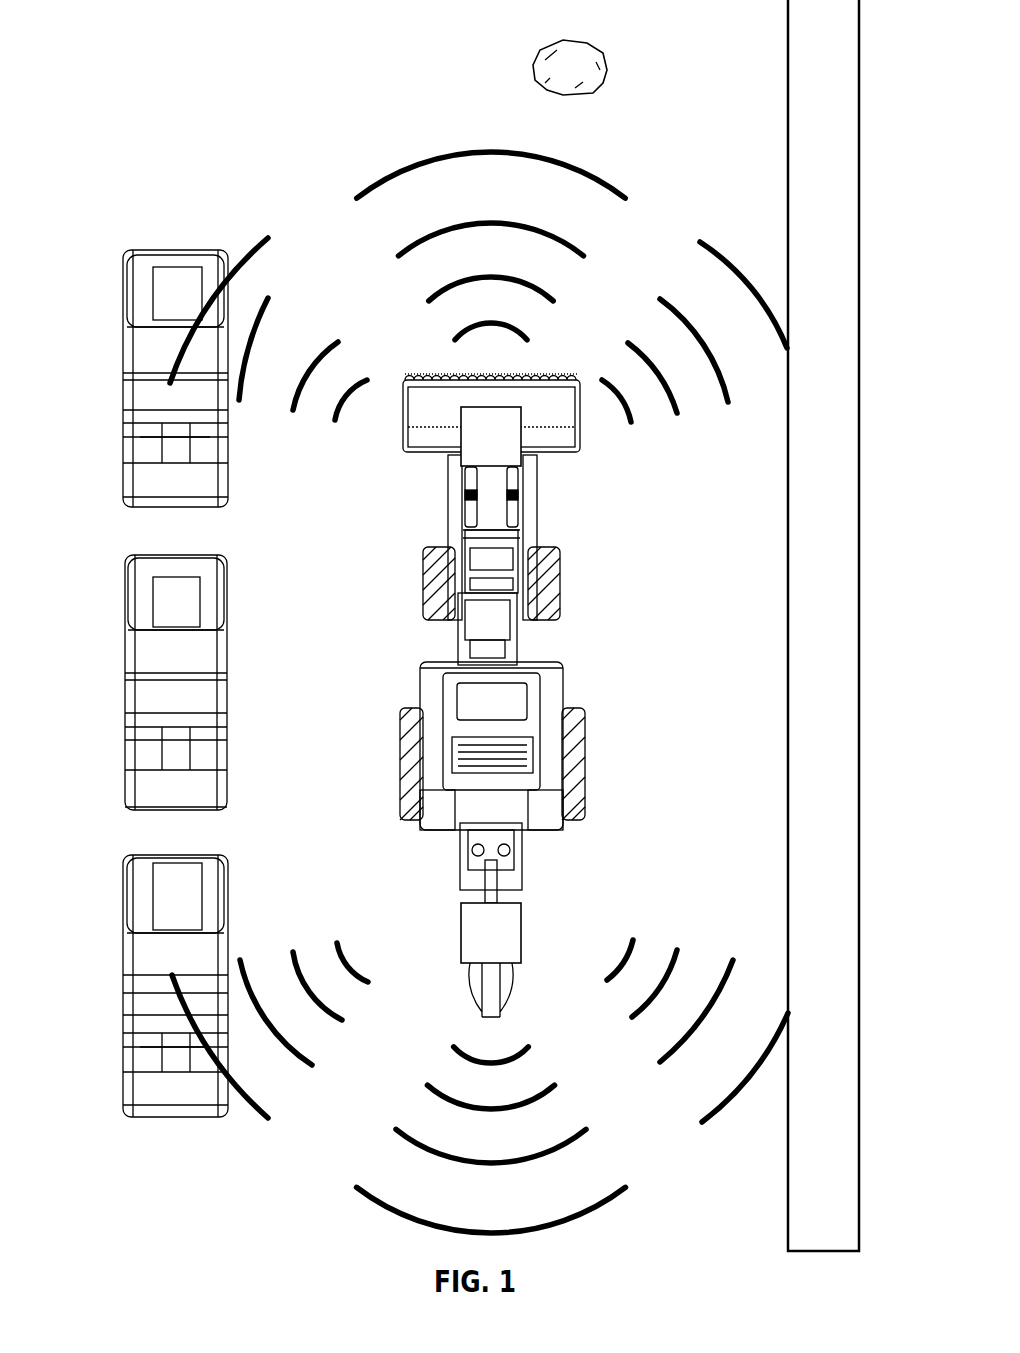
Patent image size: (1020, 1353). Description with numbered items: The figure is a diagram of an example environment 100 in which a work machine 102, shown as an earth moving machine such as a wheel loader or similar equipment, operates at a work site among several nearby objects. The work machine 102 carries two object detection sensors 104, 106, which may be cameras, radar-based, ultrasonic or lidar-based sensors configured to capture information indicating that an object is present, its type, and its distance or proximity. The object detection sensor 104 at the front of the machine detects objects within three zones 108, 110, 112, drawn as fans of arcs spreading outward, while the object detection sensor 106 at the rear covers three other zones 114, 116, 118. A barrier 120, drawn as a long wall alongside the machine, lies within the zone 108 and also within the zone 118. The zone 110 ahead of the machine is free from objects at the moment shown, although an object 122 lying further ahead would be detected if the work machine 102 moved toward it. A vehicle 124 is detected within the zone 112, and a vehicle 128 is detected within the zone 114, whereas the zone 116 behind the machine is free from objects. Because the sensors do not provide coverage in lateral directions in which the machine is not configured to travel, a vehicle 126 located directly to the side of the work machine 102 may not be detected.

The environment 100 is at (140, 55).
The work machine 102 is at (585, 594).
The object detection sensor 104 is at (491, 436).
The object detection sensor 106 is at (491, 933).
The zone 108 is at (705, 398).
The zone 110 is at (577, 230).
The zone 112 is at (278, 400).
The zone 114 is at (272, 973).
The zone 116 is at (595, 1178).
The zone 118 is at (703, 967).
The barrier 120 is at (860, 410).
The object 122 is at (552, 78).
The vehicle 124 is at (123, 380).
The vehicle 126 is at (123, 683).
The vehicle 128 is at (123, 993).